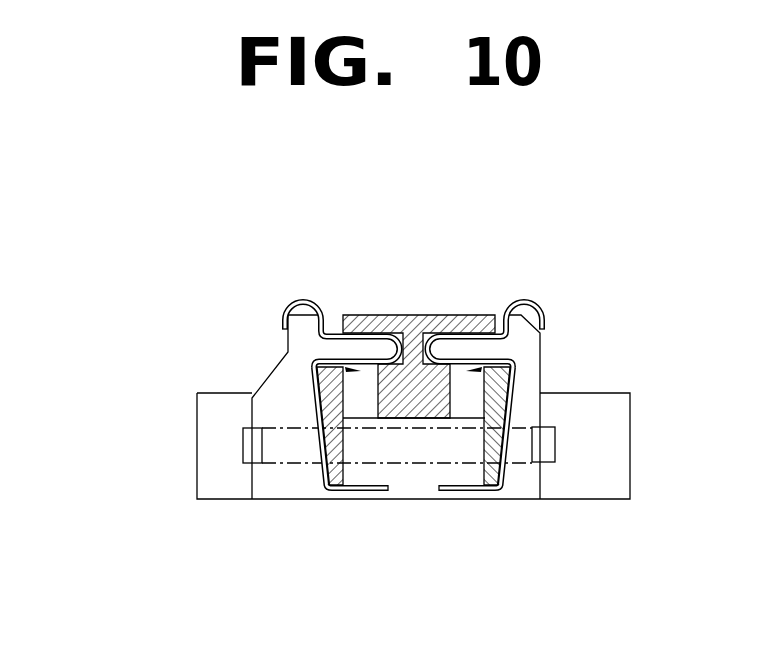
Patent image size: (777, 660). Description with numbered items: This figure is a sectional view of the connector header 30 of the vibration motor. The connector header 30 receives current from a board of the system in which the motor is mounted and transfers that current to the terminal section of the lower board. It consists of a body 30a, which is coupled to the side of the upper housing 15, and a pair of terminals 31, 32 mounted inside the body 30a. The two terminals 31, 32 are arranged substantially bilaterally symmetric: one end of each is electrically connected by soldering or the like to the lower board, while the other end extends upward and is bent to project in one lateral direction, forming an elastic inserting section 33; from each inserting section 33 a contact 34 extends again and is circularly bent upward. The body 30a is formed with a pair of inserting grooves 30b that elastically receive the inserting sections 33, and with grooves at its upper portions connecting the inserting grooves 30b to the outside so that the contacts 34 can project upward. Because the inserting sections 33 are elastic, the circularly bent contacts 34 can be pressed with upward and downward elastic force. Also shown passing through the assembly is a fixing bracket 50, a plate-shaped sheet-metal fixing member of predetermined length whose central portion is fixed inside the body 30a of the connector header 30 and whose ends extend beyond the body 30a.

The upper housing 15 is at (200, 447).
The connector header 30 is at (580, 367).
The body 30a is at (535, 345).
The inserting grooves 30b is at (450, 349).
The terminal 31 is at (512, 408).
The terminal 32 is at (310, 417).
The elastic inserting sections 33 is at (354, 340).
The contacts 34 is at (302, 300).
The fixing bracket 50 is at (422, 453).